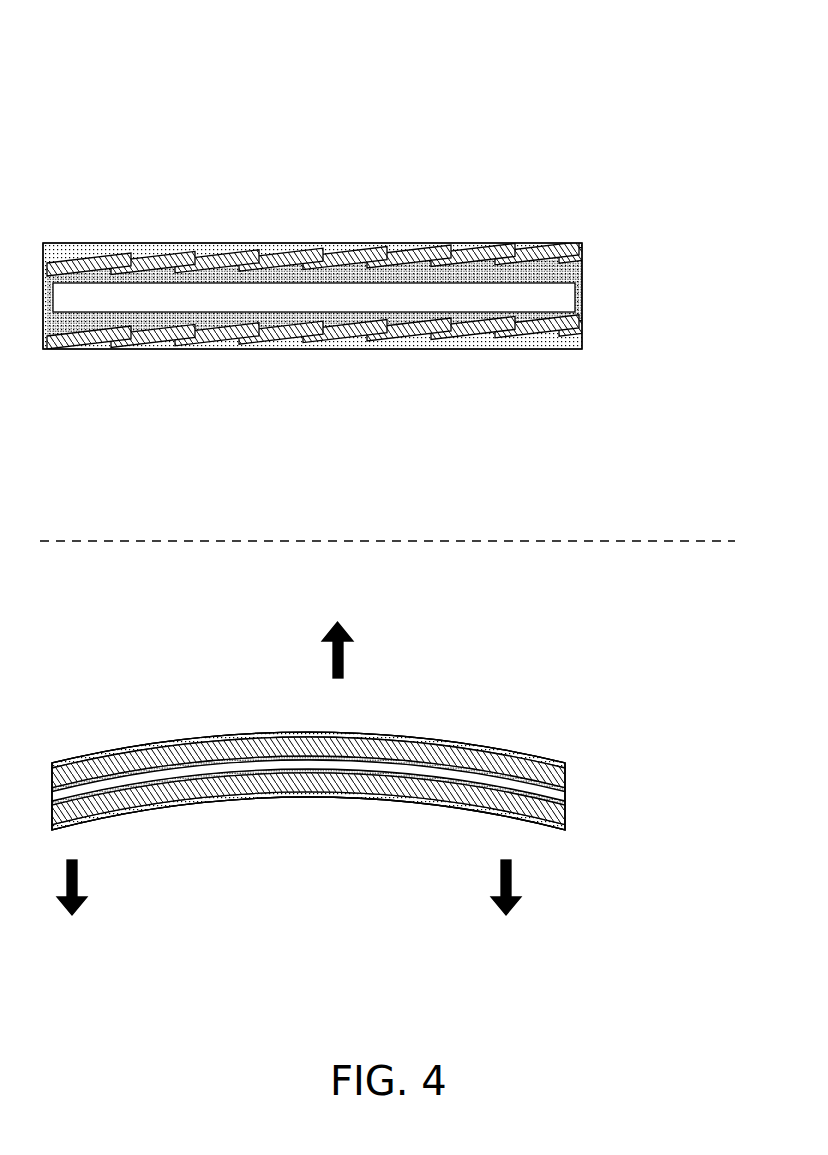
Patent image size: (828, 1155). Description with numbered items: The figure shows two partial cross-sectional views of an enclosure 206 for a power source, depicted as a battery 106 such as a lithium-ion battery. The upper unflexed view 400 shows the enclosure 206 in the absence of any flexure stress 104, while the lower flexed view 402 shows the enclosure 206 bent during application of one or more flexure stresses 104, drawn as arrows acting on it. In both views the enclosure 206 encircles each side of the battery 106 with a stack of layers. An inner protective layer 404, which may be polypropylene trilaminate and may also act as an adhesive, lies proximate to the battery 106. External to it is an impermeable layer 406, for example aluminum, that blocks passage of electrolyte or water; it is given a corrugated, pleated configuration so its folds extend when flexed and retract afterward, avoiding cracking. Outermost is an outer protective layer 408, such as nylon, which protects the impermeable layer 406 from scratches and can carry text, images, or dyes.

The unflexed view 400 is at (561, 67).
The flexed view 402 is at (584, 594).
The enclosure 206 is at (200, 161).
The outer protective layer 408 is at (406, 248).
The impermeable layer 406 is at (553, 252).
The inner protective layer 404 is at (574, 320).
The battery 106 is at (245, 770).
The flexure stress 104 is at (330, 662).